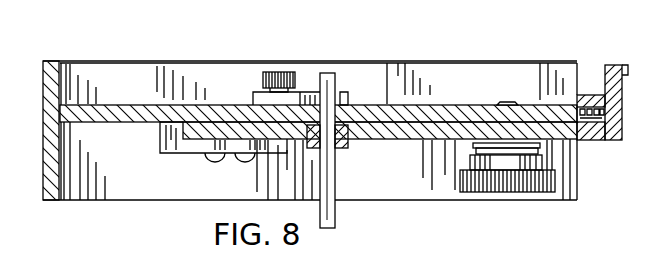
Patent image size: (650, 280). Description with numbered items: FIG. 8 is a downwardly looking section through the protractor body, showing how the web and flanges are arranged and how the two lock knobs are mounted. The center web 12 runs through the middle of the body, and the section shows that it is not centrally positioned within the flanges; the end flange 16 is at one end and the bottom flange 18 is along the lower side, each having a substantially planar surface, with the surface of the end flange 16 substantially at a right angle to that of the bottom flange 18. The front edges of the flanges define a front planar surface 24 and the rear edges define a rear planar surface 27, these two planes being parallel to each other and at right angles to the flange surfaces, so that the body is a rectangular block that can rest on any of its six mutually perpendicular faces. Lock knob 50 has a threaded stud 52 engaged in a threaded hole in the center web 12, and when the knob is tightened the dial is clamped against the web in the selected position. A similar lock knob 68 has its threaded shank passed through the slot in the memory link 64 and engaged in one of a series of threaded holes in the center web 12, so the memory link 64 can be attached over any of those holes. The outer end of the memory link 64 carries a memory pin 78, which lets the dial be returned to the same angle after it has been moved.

The center web 12 is at (108, 104).
The end flange 16 is at (42, 168).
The bottom flange 18 is at (136, 188).
The front planar surface 24 is at (375, 200).
The rear planar surface 27 is at (418, 62).
The lock knob 50 is at (503, 192).
The threaded stud 52 is at (503, 102).
The memory link 64 is at (314, 88).
The lock knob 68 is at (293, 72).
The memory pin 78 is at (336, 158).